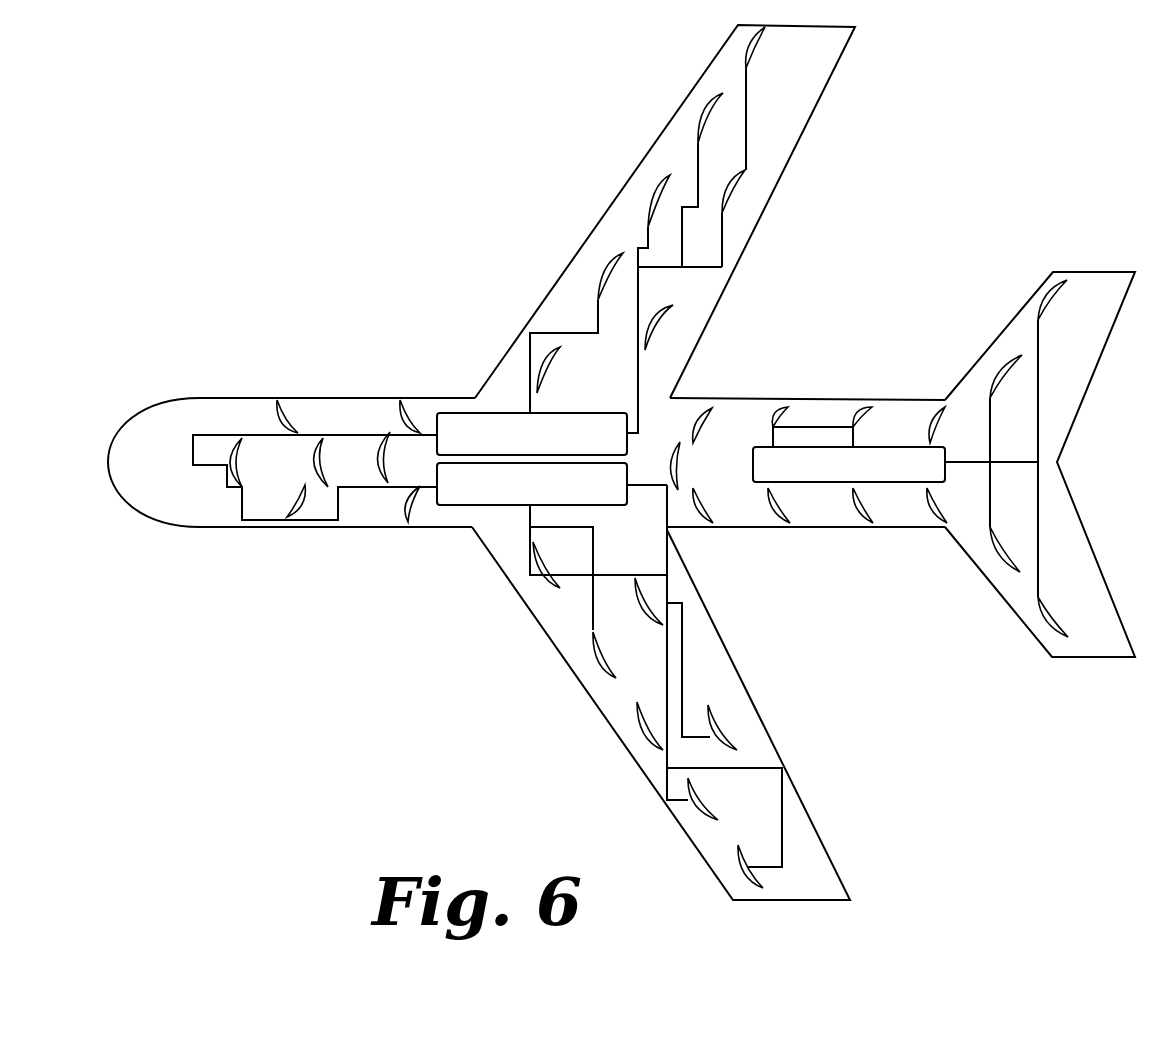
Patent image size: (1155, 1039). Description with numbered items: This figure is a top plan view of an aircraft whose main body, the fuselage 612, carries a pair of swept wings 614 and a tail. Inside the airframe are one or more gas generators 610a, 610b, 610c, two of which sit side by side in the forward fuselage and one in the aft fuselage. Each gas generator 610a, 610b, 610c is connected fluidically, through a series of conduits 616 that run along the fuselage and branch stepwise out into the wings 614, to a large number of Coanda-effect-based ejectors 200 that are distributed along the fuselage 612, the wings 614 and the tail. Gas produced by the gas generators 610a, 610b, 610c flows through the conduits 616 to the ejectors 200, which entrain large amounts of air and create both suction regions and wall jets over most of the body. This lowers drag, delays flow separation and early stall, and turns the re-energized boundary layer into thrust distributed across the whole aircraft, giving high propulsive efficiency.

The fuselage 612 is at (220, 376).
The wing 614 is at (800, 133).
The conduit 616 is at (530, 330).
The gas generator 610a is at (532, 434).
The gas generator 610b is at (552, 484).
The gas generator 610c is at (849, 464).
The Coanda-effect-based ejector 200 is at (646, 190).